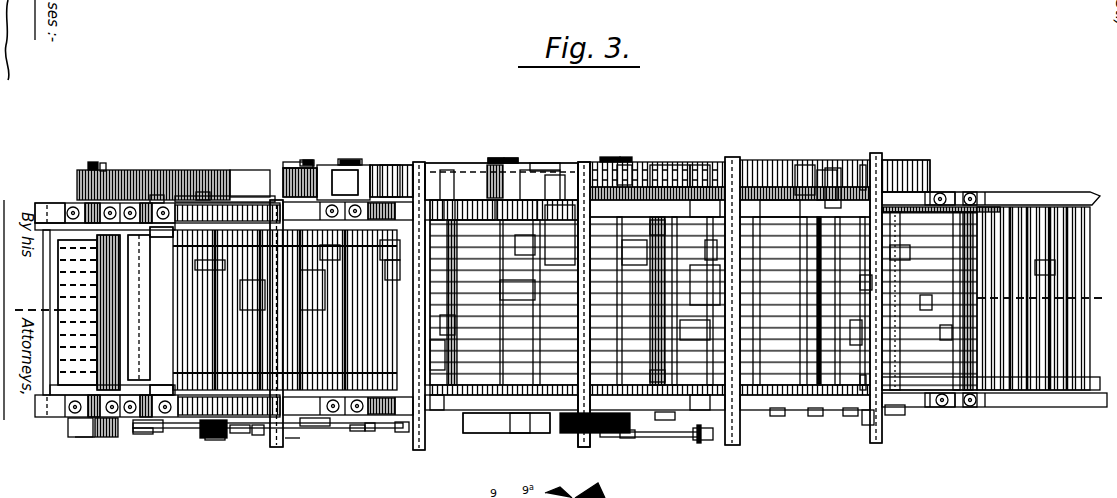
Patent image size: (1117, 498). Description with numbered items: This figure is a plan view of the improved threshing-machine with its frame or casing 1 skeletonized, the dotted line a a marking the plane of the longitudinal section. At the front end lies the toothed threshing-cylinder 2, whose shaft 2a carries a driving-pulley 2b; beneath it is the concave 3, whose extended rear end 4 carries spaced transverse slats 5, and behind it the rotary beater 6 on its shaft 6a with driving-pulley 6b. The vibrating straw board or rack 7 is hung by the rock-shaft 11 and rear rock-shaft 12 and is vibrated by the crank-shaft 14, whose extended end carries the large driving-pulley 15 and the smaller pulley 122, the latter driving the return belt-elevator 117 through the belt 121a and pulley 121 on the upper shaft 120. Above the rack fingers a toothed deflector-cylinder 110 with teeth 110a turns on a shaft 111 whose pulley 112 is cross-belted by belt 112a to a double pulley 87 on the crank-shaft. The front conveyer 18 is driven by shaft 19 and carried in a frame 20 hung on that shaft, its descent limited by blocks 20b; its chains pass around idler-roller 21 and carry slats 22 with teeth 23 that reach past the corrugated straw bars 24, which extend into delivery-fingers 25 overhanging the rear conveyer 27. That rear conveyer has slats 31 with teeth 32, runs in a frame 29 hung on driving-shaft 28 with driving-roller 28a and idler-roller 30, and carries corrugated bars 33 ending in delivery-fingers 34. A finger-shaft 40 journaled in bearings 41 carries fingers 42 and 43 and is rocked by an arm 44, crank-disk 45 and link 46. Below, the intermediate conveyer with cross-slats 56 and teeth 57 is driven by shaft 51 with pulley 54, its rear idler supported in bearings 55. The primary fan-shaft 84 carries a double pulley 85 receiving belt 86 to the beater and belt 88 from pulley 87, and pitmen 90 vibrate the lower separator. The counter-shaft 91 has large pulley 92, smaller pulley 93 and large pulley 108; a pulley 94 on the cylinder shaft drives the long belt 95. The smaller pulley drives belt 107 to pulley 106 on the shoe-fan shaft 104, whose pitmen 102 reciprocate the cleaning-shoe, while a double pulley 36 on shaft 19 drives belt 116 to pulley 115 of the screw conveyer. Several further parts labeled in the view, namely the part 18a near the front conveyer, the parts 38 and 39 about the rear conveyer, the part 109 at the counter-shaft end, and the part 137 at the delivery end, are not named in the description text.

The frame 1 is at (733, 160).
The toothed threshing-cylinder 2 is at (100, 250).
The shaft 2a is at (103, 168).
The driving-pulley 2b is at (80, 437).
The concave 3 is at (60, 250).
The extended rear end of concave 4 is at (163, 237).
The transverse slats 5 is at (205, 268).
The rotary beater 6 is at (139, 307).
The beater shaft 6a is at (150, 198).
The driving-pulley 6b is at (110, 437).
The vibrating straw board or rack 7 is at (255, 280).
The rock-shaft 11 is at (330, 255).
The rear rock-shaft 12 is at (345, 195).
The crank-shaft 14 is at (278, 448).
The large driving-pulley 15 is at (240, 172).
The front conveyer 18 is at (517, 290).
The grate frame member 18a is at (648, 190).
The driving-shaft 19 is at (578, 185).
The conveyer-frame 20 is at (555, 198).
The blocks 20b is at (437, 200).
The idler-roller 21 is at (447, 198).
The transverse slats 22 is at (518, 230).
The forwardly-inclined teeth 23 is at (522, 245).
The corrugated straw bars or rods 24 is at (555, 260).
The delivery-fingers 25 is at (640, 262).
The rear traveling conveyer 27 is at (695, 330).
The driving-shaft 28 is at (833, 168).
The driving-roller 28a is at (790, 225).
The frame 29 is at (690, 200).
The idler-roller 30 is at (655, 375).
The transverse slats 31 is at (710, 215).
The teeth 32 is at (655, 232).
The corrugated bars 33 is at (835, 195).
The delivery-fingers 34 is at (560, 198).
The double pulley 36 is at (628, 438).
The hatched cover 38 is at (805, 165).
The top frame 39 is at (668, 186).
The finger-shaft 40 is at (868, 283).
The bearings 41 is at (862, 165).
The fingers 42 is at (855, 340).
The fingers 43 is at (926, 300).
The arm 44 is at (868, 425).
The crank-disk 45 is at (815, 412).
The link 46 is at (850, 412).
The driving-shaft 51 is at (370, 431).
The driving-pulley 54 is at (965, 190).
The bearings 55 is at (395, 172).
The cross-slats 56 is at (895, 255).
The teeth 57 is at (946, 335).
The fan-shaft 84 is at (220, 170).
The double pulley 85 is at (210, 438).
The belt 86 is at (170, 433).
The double pulley 87 is at (262, 440).
The belt 88 is at (465, 240).
The pitmen 90 is at (205, 192).
The counter-shaft 91 is at (497, 158).
The large pulley 92 is at (470, 172).
The smaller pulley 93 is at (515, 159).
The pulley 94 is at (92, 166).
The long belt 95 is at (155, 172).
The pitmen 102 is at (775, 416).
The shoe-fan shaft 104 is at (608, 157).
The pulley 106 is at (622, 157).
The belt 107 is at (545, 165).
The large pulley 108 is at (520, 433).
The gear box 109 is at (555, 433).
The toothed deflector-cylinder 110 is at (390, 265).
The teeth 110a is at (395, 256).
The shaft 111 is at (419, 162).
The pulley 112 is at (400, 432).
The cross-belt 112a is at (360, 428).
The pulley 115 is at (700, 440).
The belt 116 is at (660, 437).
The belt-elevator 117 is at (382, 165).
The upper shaft 120 is at (330, 168).
The pulley 121 is at (340, 158).
The belt 121a is at (306, 162).
The smaller pulley 122 is at (290, 162).
The slat 137 is at (1046, 270).
The section line a is at (561, 296).